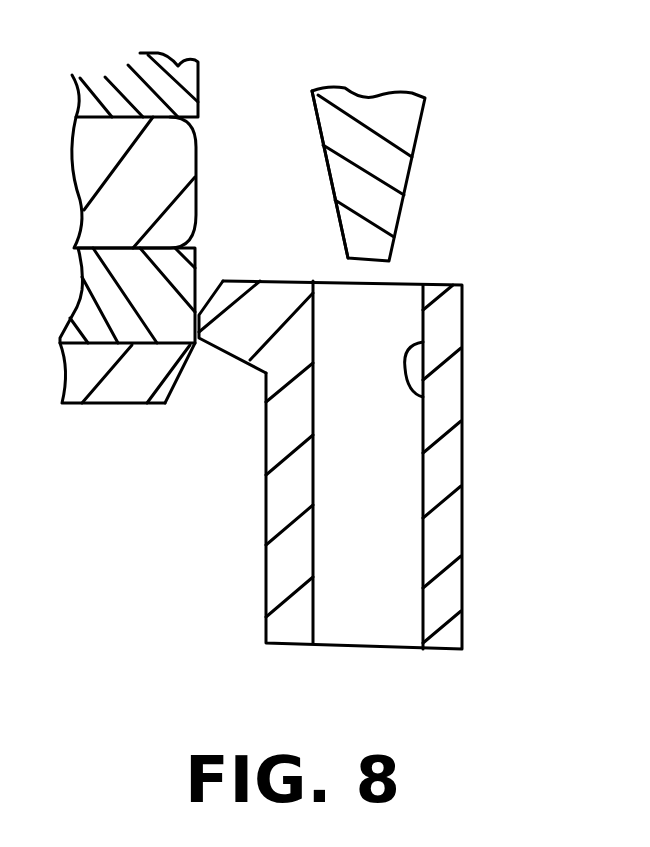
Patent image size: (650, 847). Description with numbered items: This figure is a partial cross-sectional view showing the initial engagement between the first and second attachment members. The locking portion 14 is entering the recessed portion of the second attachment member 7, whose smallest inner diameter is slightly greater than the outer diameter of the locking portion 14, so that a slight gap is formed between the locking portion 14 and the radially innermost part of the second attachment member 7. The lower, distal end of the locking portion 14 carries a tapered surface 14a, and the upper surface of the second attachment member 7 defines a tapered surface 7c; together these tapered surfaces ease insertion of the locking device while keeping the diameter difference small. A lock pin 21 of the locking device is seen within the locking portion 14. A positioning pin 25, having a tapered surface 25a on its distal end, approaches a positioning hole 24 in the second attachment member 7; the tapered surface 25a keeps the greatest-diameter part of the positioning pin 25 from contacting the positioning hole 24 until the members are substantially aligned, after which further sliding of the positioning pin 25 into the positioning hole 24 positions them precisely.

The second attachment member 7 is at (460, 510).
The tapered surface 7c is at (211, 292).
The locking portion 14 is at (120, 372).
The tapered surface 14a is at (182, 373).
The lock pin 21 is at (170, 163).
The positioning hole 24 is at (423, 398).
The positioning pin 25 is at (395, 120).
The tapered surface 25a is at (327, 189).